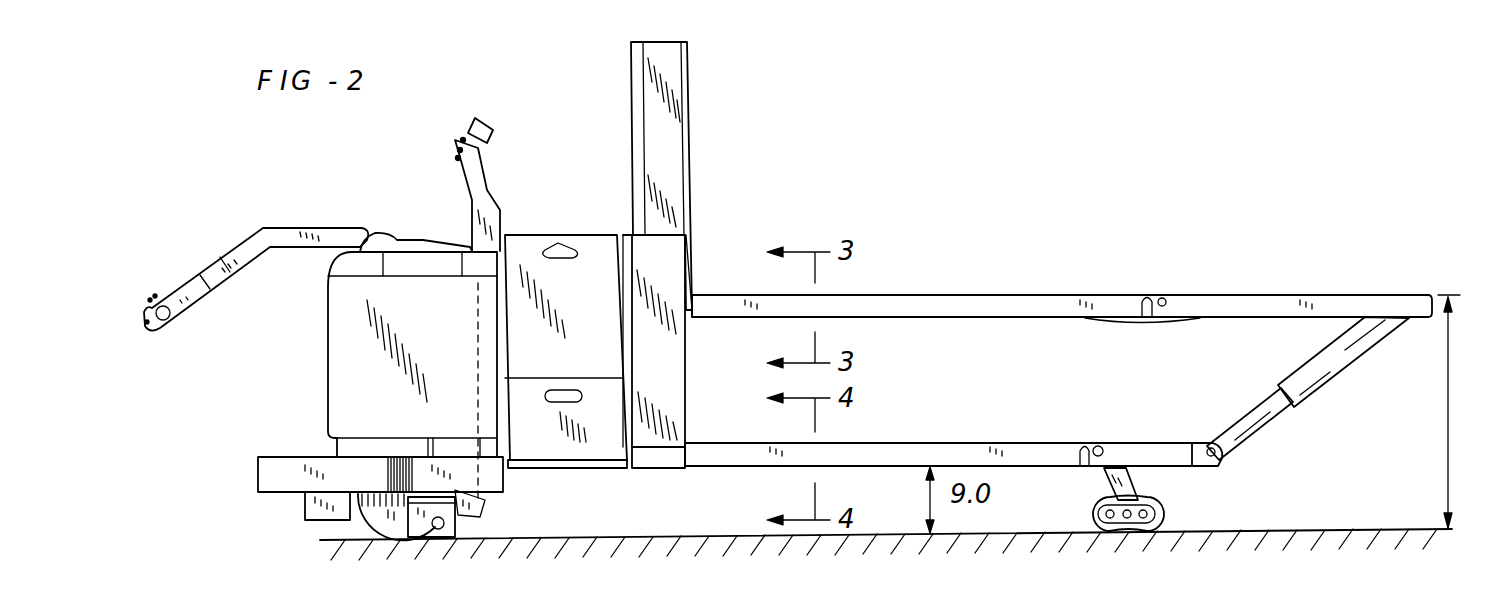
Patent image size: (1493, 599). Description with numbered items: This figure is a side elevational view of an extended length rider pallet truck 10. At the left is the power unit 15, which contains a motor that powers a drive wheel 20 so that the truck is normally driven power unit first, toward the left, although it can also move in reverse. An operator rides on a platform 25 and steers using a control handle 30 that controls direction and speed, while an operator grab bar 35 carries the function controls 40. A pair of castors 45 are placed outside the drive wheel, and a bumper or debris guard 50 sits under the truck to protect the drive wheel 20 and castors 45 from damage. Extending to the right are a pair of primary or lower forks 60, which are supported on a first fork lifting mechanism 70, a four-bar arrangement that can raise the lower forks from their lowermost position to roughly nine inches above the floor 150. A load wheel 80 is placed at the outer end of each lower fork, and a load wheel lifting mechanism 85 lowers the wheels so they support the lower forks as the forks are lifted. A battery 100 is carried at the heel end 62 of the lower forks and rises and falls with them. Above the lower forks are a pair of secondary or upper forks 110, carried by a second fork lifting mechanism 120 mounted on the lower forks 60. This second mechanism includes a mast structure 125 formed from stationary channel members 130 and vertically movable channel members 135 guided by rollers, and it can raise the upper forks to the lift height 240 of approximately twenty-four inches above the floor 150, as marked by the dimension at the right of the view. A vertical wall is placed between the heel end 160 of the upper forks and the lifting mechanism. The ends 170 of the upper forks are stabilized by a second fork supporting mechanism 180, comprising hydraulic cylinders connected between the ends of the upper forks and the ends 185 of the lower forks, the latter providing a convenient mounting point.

The rider pallet truck 10 is at (368, 166).
The power unit 15 is at (343, 360).
The drive wheel 20 is at (370, 518).
The platform 25 is at (303, 457).
The control handle 30 is at (260, 240).
The operator grab bar 35 is at (475, 177).
The function controls 40 is at (487, 130).
The castors 45 is at (442, 538).
The bumper or debris guard 50 is at (303, 508).
The lower forks 60 is at (850, 453).
The heel end 62 is at (533, 465).
The first fork lifting mechanism 70 is at (478, 283).
The load wheel 80 is at (1165, 510).
The load wheel lifting mechanism 85 is at (1019, 518).
The battery 100 is at (587, 260).
The upper forks 110 is at (890, 307).
The second fork lifting mechanism 120 is at (697, 247).
The mast structure 125 is at (660, 158).
The stationary channel members 130 is at (670, 427).
The vertically movable channel members 135 is at (680, 65).
The floor 150 is at (1337, 507).
The heel end 160 is at (703, 307).
The ends 170 is at (1402, 293).
The second fork supporting mechanism 180 is at (1335, 370).
The ends 185 is at (1168, 442).
The lift height 240 is at (1452, 411).